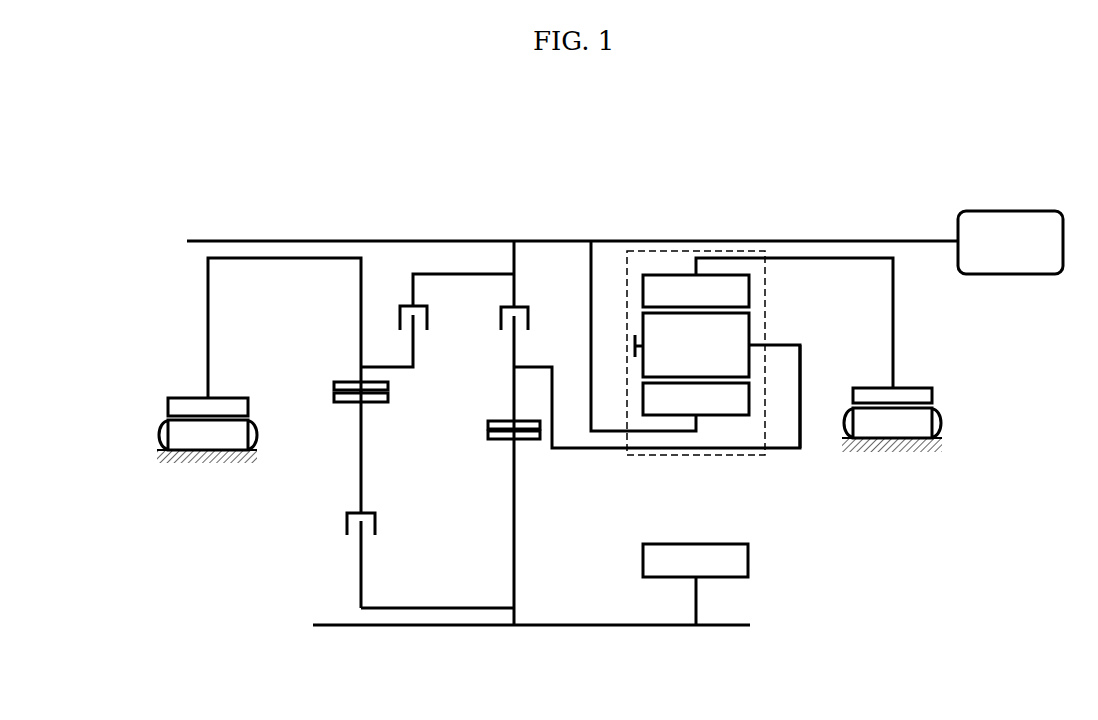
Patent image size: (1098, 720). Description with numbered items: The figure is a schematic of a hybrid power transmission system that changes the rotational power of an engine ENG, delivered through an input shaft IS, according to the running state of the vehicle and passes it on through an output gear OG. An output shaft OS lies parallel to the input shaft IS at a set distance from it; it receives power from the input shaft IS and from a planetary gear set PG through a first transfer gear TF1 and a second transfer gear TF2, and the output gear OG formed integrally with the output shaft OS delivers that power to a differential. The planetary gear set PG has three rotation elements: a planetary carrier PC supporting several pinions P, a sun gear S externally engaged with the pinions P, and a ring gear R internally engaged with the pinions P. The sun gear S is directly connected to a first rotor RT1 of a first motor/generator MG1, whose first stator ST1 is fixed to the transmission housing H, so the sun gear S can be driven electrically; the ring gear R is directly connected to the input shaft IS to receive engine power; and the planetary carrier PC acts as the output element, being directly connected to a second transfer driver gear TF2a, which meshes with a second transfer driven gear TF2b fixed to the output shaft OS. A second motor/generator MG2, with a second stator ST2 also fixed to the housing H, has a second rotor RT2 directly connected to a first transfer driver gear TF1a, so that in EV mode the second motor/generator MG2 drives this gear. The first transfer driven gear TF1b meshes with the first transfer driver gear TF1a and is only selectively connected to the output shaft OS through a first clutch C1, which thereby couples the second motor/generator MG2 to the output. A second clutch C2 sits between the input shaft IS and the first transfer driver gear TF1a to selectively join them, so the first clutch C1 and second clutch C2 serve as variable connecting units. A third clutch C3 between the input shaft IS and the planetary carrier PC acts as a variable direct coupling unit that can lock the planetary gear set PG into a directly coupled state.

The engine ENG is at (1010, 242).
The input shaft IS is at (793, 241).
The output shaft OS is at (540, 627).
The first clutch C1 is at (381, 522).
The second clutch C2 is at (406, 300).
The third clutch C3 is at (520, 302).
The first transfer gear TF1 is at (305, 369).
The first transfer driver gear TF1a is at (334, 385).
The first transfer driven gear TF1b is at (334, 397).
The second transfer gear TF2 is at (458, 457).
The second transfer driver gear TF2a is at (488, 425).
The second transfer driven gear TF2b is at (488, 436).
The planetary gear set PG is at (674, 402).
The sun gear S is at (696, 291).
The pinions P is at (696, 345).
The ring gear R is at (696, 399).
The planetary carrier PC is at (786, 345).
The output gear OG is at (695, 560).
The first motor/generator MG1 is at (958, 411).
The first rotor RT1 is at (932, 393).
The first stator ST1 is at (940, 421).
The second motor/generator MG2 is at (149, 423).
The second rotor RT2 is at (168, 405).
The second stator ST2 is at (168, 434).
The transmission housing H is at (208, 464).